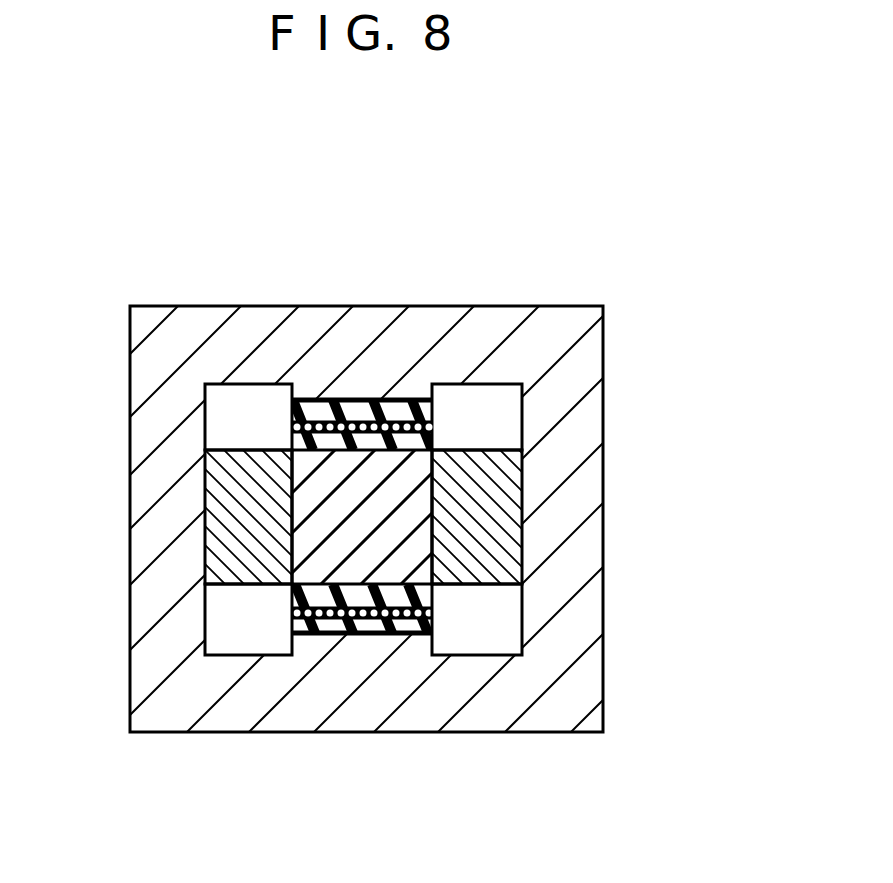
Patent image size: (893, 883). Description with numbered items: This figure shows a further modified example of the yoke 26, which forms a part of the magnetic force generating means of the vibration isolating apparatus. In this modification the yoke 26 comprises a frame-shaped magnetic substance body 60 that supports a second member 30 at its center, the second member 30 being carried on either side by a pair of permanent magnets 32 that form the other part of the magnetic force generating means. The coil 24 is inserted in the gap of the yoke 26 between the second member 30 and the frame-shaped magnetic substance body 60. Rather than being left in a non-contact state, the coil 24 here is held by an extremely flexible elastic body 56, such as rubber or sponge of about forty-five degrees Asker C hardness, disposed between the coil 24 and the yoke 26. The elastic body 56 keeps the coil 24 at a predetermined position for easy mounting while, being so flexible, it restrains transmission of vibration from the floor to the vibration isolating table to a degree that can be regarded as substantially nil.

The yoke 26 is at (612, 346).
The frame-shaped magnetic substance body 60 is at (603, 517).
The second member 30 is at (305, 548).
The coil 24 is at (354, 436).
The elastic body 56 is at (290, 440).
The permanent magnet 32 is at (464, 590).